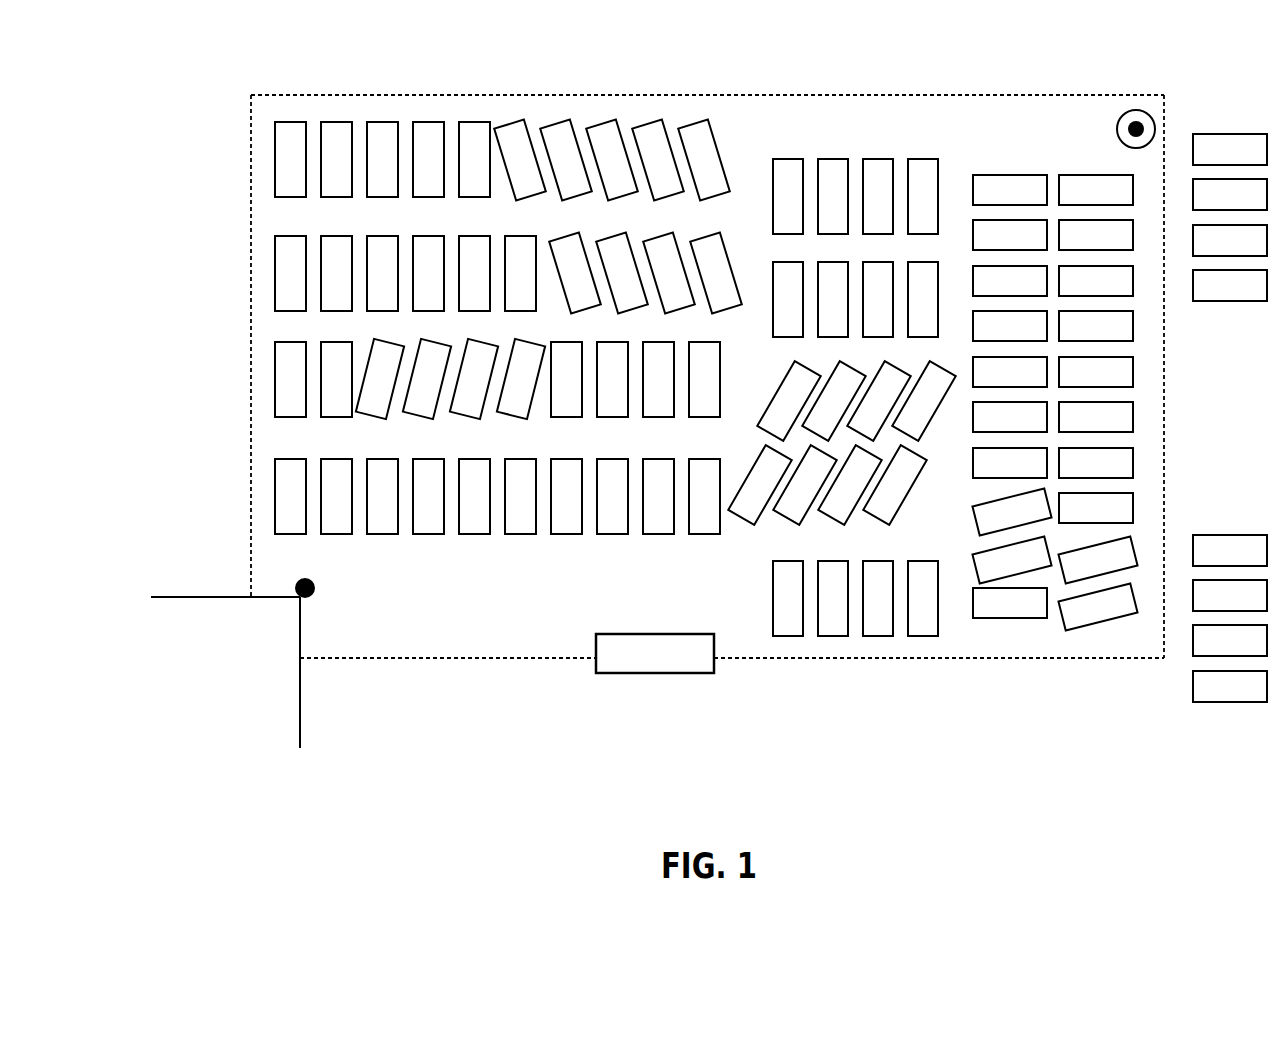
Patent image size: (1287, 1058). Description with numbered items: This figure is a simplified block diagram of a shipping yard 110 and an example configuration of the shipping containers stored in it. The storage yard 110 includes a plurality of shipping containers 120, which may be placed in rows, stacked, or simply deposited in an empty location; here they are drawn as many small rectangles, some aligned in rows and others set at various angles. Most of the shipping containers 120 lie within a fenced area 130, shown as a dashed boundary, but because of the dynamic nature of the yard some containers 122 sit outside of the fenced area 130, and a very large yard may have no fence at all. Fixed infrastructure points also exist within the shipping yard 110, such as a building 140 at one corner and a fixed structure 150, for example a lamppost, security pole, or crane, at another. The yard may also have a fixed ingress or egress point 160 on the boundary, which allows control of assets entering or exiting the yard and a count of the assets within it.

The shipping yard 110 is at (902, 80).
The shipping containers 120 is at (374, 524).
The containers outside of the fenced area 122 is at (1222, 690).
The fenced area 130 is at (350, 95).
The building 140 is at (226, 660).
The fixed structure 150 is at (1120, 112).
The ingress or egress points 160 is at (632, 668).